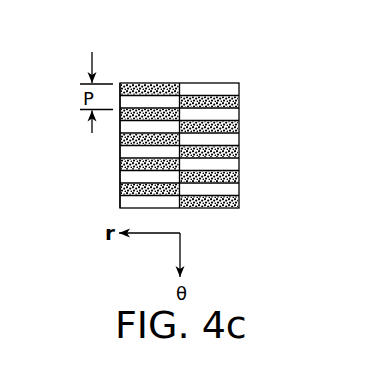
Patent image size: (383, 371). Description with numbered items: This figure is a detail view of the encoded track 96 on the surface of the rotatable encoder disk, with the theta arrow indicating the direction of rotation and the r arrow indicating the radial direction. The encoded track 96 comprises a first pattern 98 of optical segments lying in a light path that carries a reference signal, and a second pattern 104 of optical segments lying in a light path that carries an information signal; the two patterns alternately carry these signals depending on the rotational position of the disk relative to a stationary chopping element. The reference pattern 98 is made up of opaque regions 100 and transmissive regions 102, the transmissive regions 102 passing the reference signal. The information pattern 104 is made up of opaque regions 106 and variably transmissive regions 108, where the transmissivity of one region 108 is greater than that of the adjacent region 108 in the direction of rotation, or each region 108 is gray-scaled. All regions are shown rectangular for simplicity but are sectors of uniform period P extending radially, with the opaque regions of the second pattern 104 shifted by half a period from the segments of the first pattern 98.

The encoded track 96 is at (200, 62).
The first pattern 98 is at (107, 196).
The opaque regions 100 is at (120, 138).
The transmissive regions 102 is at (120, 177).
The second pattern 104 is at (234, 223).
The opaque regions 106 is at (241, 105).
The variably transmissive regions 108 is at (241, 170).